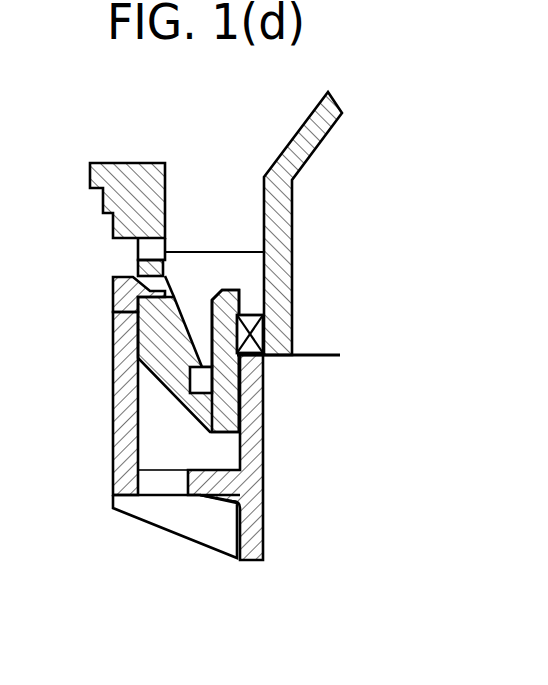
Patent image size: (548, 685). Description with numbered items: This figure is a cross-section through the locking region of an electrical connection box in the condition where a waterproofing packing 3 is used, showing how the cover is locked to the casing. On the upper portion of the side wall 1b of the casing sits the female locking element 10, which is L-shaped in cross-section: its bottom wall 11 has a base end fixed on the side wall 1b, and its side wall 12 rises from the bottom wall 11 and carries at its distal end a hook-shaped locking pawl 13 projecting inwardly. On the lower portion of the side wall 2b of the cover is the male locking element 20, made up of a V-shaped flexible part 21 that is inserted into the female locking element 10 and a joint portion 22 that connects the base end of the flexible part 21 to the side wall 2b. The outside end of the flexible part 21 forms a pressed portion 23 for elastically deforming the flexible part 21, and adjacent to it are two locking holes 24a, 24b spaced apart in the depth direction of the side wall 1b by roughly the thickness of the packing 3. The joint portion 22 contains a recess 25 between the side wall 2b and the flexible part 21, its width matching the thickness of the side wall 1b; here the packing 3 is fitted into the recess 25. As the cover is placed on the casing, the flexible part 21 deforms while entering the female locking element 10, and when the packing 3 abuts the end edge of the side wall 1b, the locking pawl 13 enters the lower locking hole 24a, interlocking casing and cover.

The male locking element 20 is at (212, 180).
The side wall of the cover 2b is at (300, 130).
The pressed portion 23 is at (95, 180).
The upper locking hole 24b is at (165, 252).
The locking pawl 13 is at (118, 280).
The joint portion 22 is at (255, 302).
The packing 3 is at (262, 338).
The lower locking hole 24a is at (113, 310).
The female locking element 10 is at (98, 372).
The recess 25 is at (262, 356).
The side wall of the female locking element 12 is at (112, 445).
The flexible part 21 is at (185, 400).
The side wall of the casing 1b is at (252, 482).
The bottom wall 11 is at (200, 497).